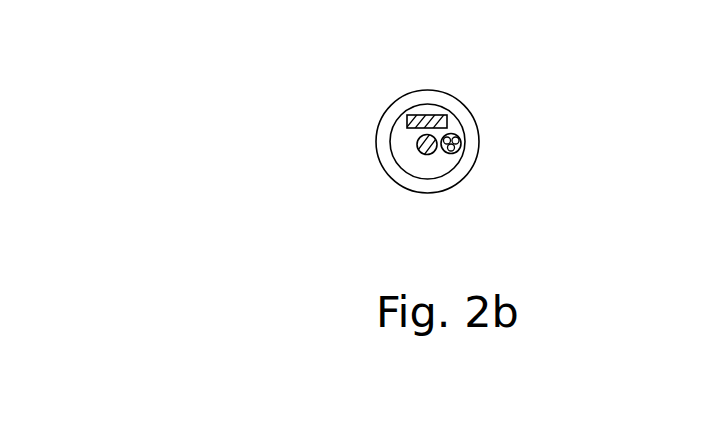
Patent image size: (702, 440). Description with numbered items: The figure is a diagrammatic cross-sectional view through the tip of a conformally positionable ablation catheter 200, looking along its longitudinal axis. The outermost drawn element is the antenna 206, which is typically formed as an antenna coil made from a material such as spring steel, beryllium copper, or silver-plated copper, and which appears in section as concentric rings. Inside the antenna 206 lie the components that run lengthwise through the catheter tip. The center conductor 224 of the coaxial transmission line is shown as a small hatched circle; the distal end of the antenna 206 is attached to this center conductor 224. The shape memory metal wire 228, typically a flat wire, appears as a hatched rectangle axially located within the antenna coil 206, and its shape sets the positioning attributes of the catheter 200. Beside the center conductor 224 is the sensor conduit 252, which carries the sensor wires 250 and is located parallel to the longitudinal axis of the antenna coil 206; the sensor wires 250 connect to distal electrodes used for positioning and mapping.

The conformally positionable ablation catheter 200 is at (566, 51).
The antenna 206 is at (379, 145).
The center conductor 224 is at (410, 134).
The shape memory metal wire 228 is at (415, 107).
The sensor wires 250 is at (454, 134).
The sensor conduit 252 is at (448, 129).